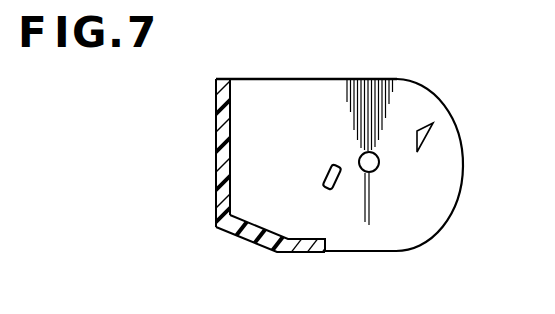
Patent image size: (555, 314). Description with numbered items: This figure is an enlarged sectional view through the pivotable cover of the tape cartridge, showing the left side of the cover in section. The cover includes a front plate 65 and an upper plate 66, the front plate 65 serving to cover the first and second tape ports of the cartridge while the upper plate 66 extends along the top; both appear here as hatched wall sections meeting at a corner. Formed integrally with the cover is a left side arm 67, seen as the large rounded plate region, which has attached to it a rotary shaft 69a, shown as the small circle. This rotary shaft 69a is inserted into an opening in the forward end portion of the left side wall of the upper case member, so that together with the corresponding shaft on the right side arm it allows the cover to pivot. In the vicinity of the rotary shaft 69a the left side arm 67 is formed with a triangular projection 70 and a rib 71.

The front plate 65 is at (216, 135).
The upper plate 66 is at (272, 253).
The left side arm 67 is at (360, 79).
The rotary shaft 69a is at (377, 169).
The triangular projection 70 is at (428, 131).
The rib 71 is at (335, 192).